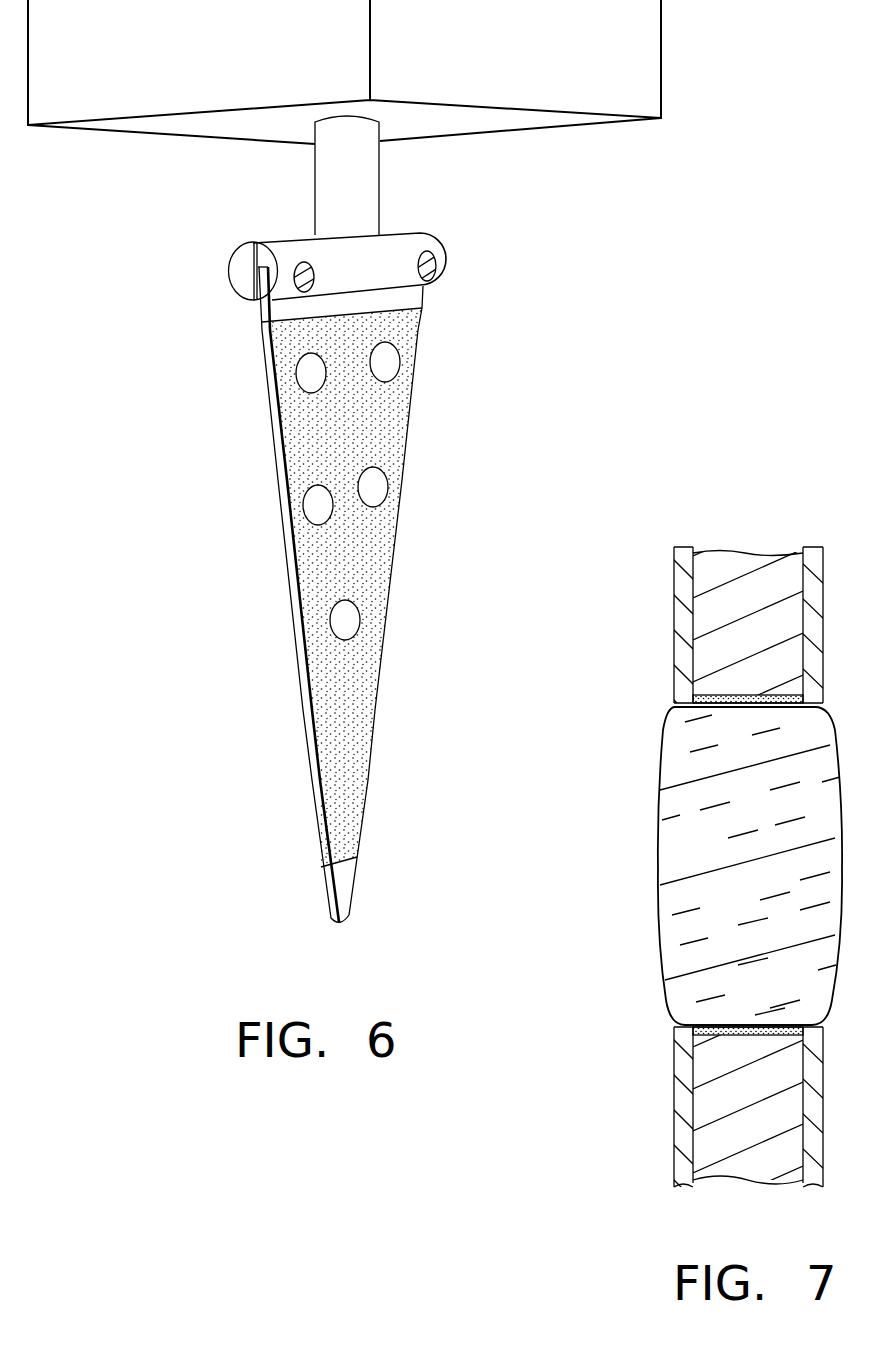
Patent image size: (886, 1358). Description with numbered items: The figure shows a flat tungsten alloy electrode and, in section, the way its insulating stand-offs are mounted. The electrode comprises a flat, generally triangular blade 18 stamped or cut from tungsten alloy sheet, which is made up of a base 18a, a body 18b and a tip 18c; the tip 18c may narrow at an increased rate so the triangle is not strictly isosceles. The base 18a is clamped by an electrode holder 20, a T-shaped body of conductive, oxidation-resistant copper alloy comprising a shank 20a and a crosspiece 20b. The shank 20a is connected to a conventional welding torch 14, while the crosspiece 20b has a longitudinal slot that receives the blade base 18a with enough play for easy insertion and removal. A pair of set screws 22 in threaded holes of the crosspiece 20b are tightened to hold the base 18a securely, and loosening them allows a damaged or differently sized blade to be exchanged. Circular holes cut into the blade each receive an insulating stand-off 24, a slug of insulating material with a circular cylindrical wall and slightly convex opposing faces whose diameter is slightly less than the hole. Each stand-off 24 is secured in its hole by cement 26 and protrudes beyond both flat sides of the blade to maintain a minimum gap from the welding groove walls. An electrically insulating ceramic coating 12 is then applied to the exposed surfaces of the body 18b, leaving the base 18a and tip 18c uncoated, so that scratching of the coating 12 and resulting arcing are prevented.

In FIG. 6, the welding torch 14 is at (662, 20).
In FIG. 6, the electrode holder 20 is at (372, 208).
In FIG. 6, the shank 20a is at (383, 185).
In FIG. 6, the crosspiece 20b is at (286, 240).
In FIG. 6, the set screws 22 is at (437, 270).
In FIG. 6, the blade 18 is at (359, 594).
In FIG. 6, the base 18a is at (262, 310).
In FIG. 6, the body 18b is at (413, 400).
In FIG. 7, the body 18b is at (705, 612).
In FIG. 6, the tip 18c is at (352, 898).
In FIG. 6, the ceramic coating 12 is at (365, 658).
In FIG. 7, the ceramic coating 12 is at (673, 658).
In FIG. 6, the insulating stand-off 24 is at (306, 503).
In FIG. 7, the insulating stand-off 24 is at (660, 800).
In FIG. 7, the cement 26 is at (687, 686).